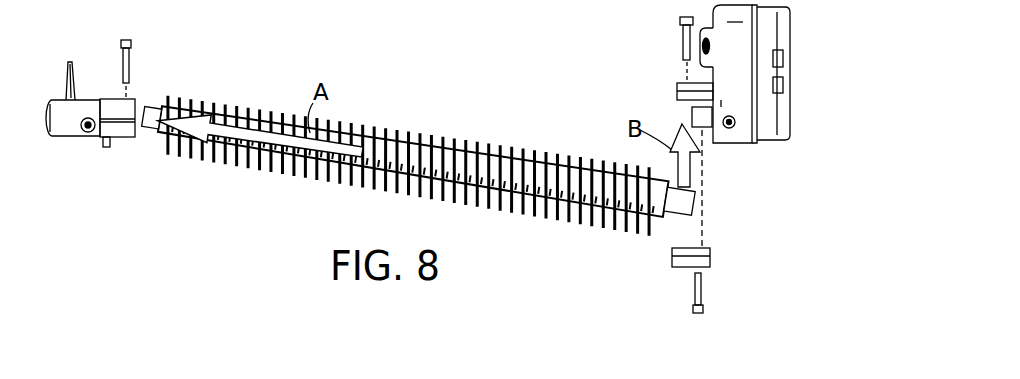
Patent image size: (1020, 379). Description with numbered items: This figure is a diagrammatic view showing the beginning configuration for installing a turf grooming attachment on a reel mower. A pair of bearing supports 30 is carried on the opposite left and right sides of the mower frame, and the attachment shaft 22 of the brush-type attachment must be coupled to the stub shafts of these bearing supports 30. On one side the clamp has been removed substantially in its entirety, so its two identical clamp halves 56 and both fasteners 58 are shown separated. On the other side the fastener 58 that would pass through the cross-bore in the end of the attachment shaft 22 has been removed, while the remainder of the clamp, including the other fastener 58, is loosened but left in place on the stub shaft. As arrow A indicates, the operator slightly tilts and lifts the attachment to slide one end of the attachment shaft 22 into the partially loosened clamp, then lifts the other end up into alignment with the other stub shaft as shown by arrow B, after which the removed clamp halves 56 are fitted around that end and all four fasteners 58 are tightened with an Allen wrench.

The attachment shaft 22 is at (153, 112).
The bearing support 30 is at (409, 96).
The clamp half 56 is at (113, 98).
The fastener 58 is at (132, 62).